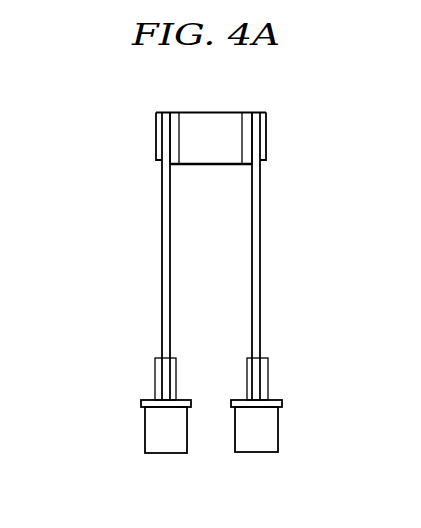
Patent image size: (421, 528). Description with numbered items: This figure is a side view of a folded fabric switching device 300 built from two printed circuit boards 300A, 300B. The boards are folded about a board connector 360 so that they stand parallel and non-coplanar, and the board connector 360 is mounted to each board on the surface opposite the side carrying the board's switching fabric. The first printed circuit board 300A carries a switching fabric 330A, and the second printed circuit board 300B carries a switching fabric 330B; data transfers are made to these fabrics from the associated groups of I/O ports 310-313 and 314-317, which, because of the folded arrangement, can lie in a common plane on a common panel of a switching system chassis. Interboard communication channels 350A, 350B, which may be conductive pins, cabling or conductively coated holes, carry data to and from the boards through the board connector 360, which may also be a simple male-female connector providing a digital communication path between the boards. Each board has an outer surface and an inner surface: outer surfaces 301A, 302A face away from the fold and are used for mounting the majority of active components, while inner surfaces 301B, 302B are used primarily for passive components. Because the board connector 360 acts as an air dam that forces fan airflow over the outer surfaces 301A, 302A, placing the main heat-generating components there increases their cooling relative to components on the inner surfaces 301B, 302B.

The folded fabric switching device 300 is at (112, 73).
The printed circuit board 300A is at (167, 239).
The printed circuit board 300B is at (256, 240).
The outer surface 301A is at (161, 313).
The inner surface 301B is at (173, 325).
The outer surface 302A is at (263, 287).
The inner surface 302B is at (250, 273).
The switching fabric 330A is at (156, 133).
The switching fabric 330B is at (266, 133).
The interboard communication channel 350A is at (175, 118).
The interboard communication channel 350B is at (247, 118).
The board connector 360 is at (210, 158).
The I/O ports 310-313 is at (111, 405).
The I/O ports 314-317 is at (310, 405).